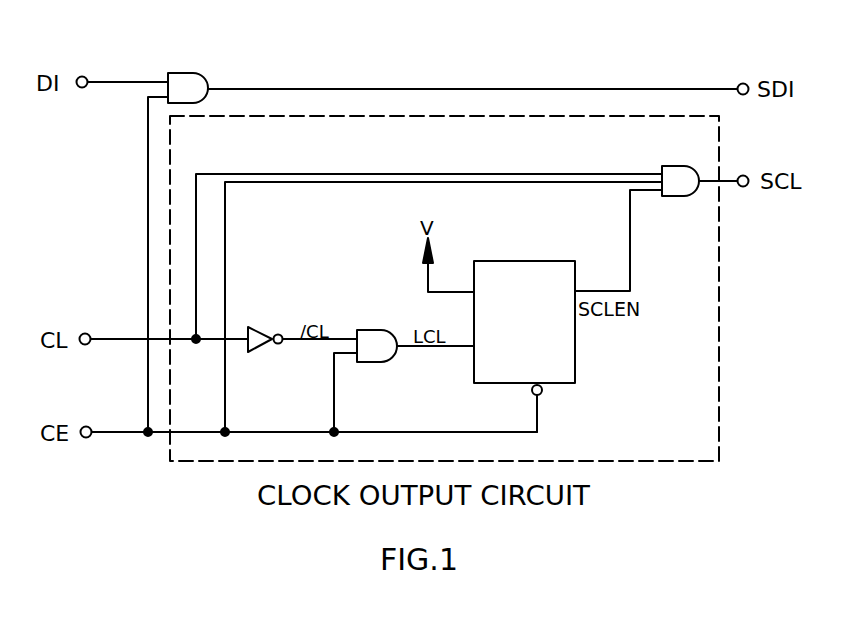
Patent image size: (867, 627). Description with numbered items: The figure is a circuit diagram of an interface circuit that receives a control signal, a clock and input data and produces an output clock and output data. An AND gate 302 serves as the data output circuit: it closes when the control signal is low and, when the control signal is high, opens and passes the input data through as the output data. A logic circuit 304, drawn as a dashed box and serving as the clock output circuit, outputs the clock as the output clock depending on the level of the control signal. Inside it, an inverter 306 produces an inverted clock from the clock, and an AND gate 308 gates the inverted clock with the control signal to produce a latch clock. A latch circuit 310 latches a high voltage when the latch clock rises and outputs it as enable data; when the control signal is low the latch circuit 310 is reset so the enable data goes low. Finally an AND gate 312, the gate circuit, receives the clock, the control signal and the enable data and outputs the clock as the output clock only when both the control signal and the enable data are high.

The AND gate 302 is at (197, 73).
The logic circuit 304 is at (615, 461).
The inverter 306 is at (254, 327).
The AND gate 308 is at (380, 362).
The latch circuit 310 is at (520, 261).
The AND gate 312 is at (682, 197).